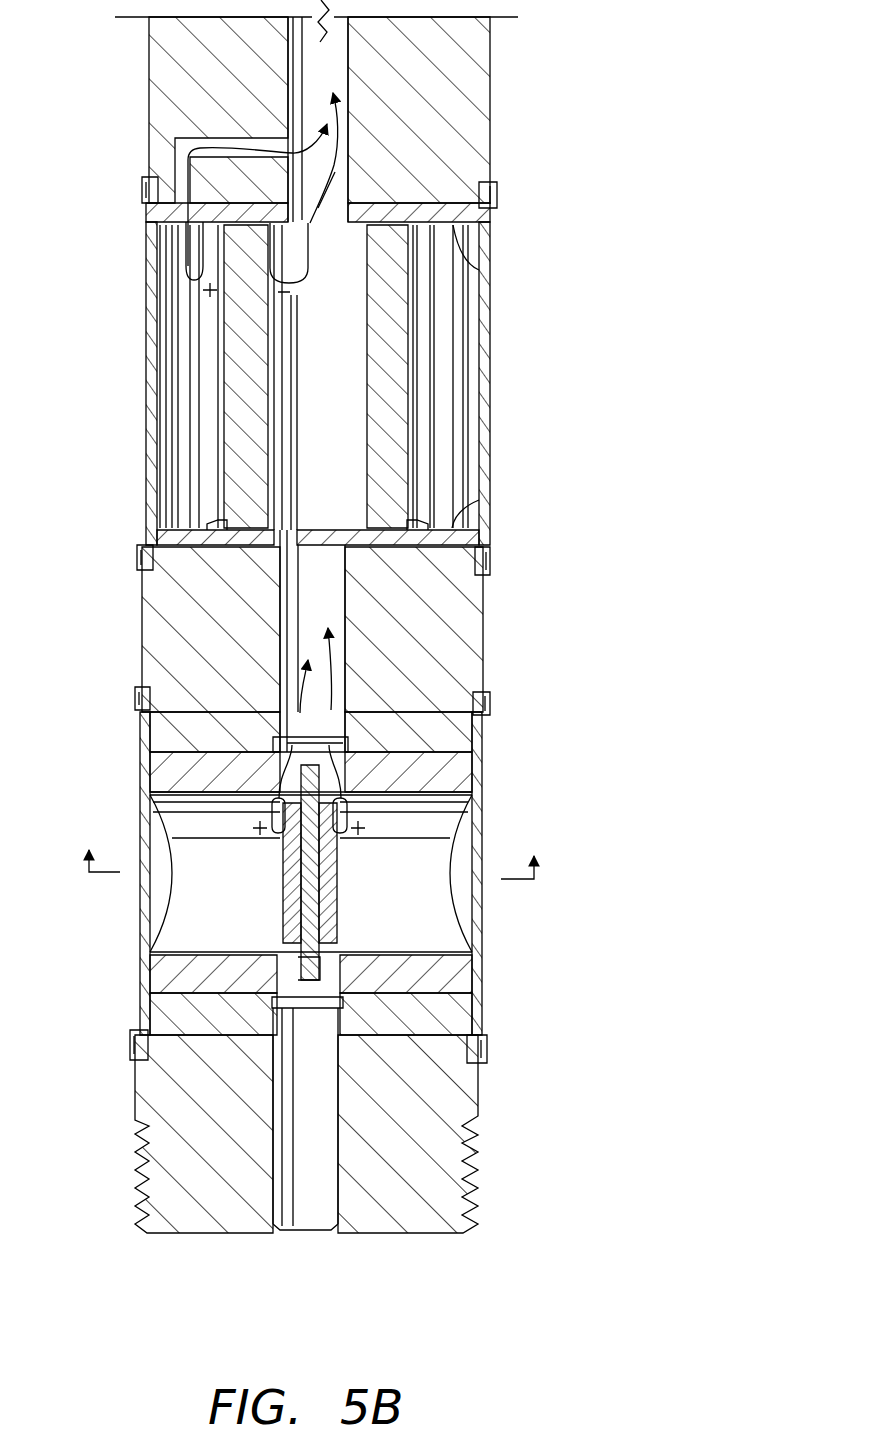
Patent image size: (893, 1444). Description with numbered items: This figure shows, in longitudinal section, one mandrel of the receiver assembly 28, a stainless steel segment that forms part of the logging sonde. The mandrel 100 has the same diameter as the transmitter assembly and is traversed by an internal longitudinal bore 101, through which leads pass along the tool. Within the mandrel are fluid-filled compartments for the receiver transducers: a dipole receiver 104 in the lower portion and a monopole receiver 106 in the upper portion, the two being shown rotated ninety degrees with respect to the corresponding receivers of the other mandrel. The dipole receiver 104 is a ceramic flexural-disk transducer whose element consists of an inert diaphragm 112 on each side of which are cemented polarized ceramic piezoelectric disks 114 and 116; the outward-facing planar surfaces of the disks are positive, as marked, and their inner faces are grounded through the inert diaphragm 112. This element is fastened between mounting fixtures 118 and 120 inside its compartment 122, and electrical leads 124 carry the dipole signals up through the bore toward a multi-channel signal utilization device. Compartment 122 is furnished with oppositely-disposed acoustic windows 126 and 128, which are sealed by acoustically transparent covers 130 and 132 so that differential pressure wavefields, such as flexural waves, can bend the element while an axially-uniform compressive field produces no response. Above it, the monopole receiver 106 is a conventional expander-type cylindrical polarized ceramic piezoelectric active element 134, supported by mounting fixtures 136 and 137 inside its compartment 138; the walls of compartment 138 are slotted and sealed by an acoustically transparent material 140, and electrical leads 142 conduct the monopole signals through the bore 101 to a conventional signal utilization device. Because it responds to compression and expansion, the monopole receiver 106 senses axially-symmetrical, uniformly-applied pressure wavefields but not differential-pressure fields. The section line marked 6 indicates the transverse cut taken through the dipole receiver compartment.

The mandrel 100 is at (490, 92).
The internal longitudinal bore 101 is at (332, 580).
The dipole receiver transducer 104 is at (125, 942).
The monopole receiver transducer 106 is at (498, 422).
The inert diaphragm 112 is at (312, 908).
The polarized ceramic piezoelectric disk 114 is at (290, 915).
The polarized ceramic piezoelectric disk 116 is at (330, 878).
The mounting fixture 118 is at (437, 773).
The mounting fixture 120 is at (437, 978).
The compartment 122 is at (248, 882).
The electrical leads 124 is at (328, 702).
The acoustic window 126 is at (160, 883).
The acoustic window 128 is at (457, 887).
The acoustically transparent cover 130 is at (142, 900).
The acoustically transparent cover 132 is at (477, 912).
The active element 134 is at (237, 383).
The mounting fixture 136 is at (479, 269).
The mounting fixture 137 is at (456, 513).
The compartment 138 is at (207, 430).
The acoustically transparent material 140 is at (489, 362).
The electrical leads 142 is at (313, 235).
The receiver assembly 28 is at (548, 717).
The section line 6- 6 is at (314, 847).